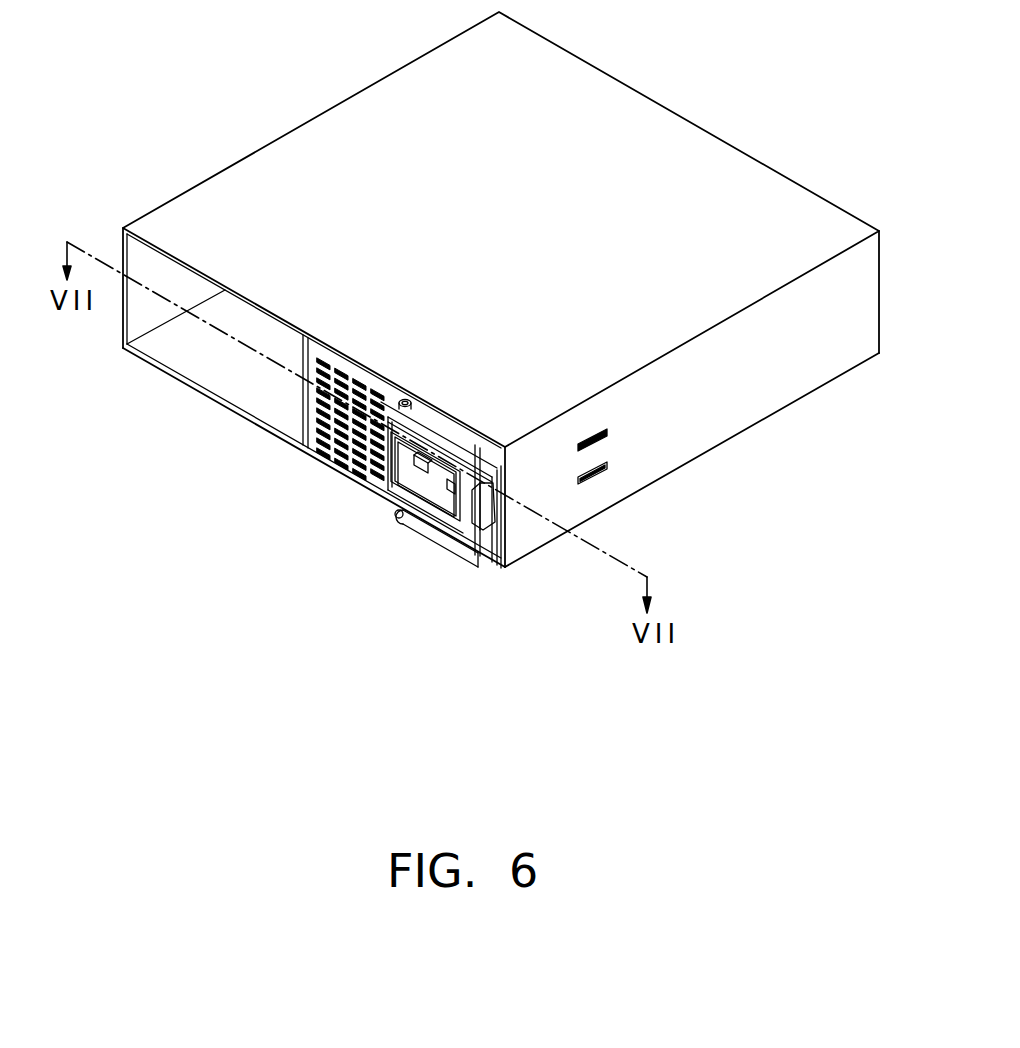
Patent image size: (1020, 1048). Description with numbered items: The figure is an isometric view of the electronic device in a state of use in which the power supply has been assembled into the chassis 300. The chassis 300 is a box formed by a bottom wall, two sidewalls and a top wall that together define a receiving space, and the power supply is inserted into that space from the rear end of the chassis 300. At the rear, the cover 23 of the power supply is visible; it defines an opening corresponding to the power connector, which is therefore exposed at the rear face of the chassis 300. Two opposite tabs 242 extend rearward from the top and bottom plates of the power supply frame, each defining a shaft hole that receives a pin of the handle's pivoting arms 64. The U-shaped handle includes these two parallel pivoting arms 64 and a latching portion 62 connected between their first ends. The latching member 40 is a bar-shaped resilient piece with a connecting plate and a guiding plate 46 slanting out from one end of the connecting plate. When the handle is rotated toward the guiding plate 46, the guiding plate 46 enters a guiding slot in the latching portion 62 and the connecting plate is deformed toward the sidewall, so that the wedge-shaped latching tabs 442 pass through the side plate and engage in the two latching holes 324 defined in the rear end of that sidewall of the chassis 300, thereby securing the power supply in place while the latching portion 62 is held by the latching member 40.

The chassis 300 is at (655, 140).
The cover 23 is at (316, 452).
The tabs 242 is at (393, 521).
The pivoting arms 64 is at (434, 536).
The latching portion 62 is at (486, 550).
The latching member 40 is at (489, 513).
The guiding plate 46 is at (492, 528).
The latching holes 324 is at (603, 474).
The latching tabs 442 is at (584, 481).